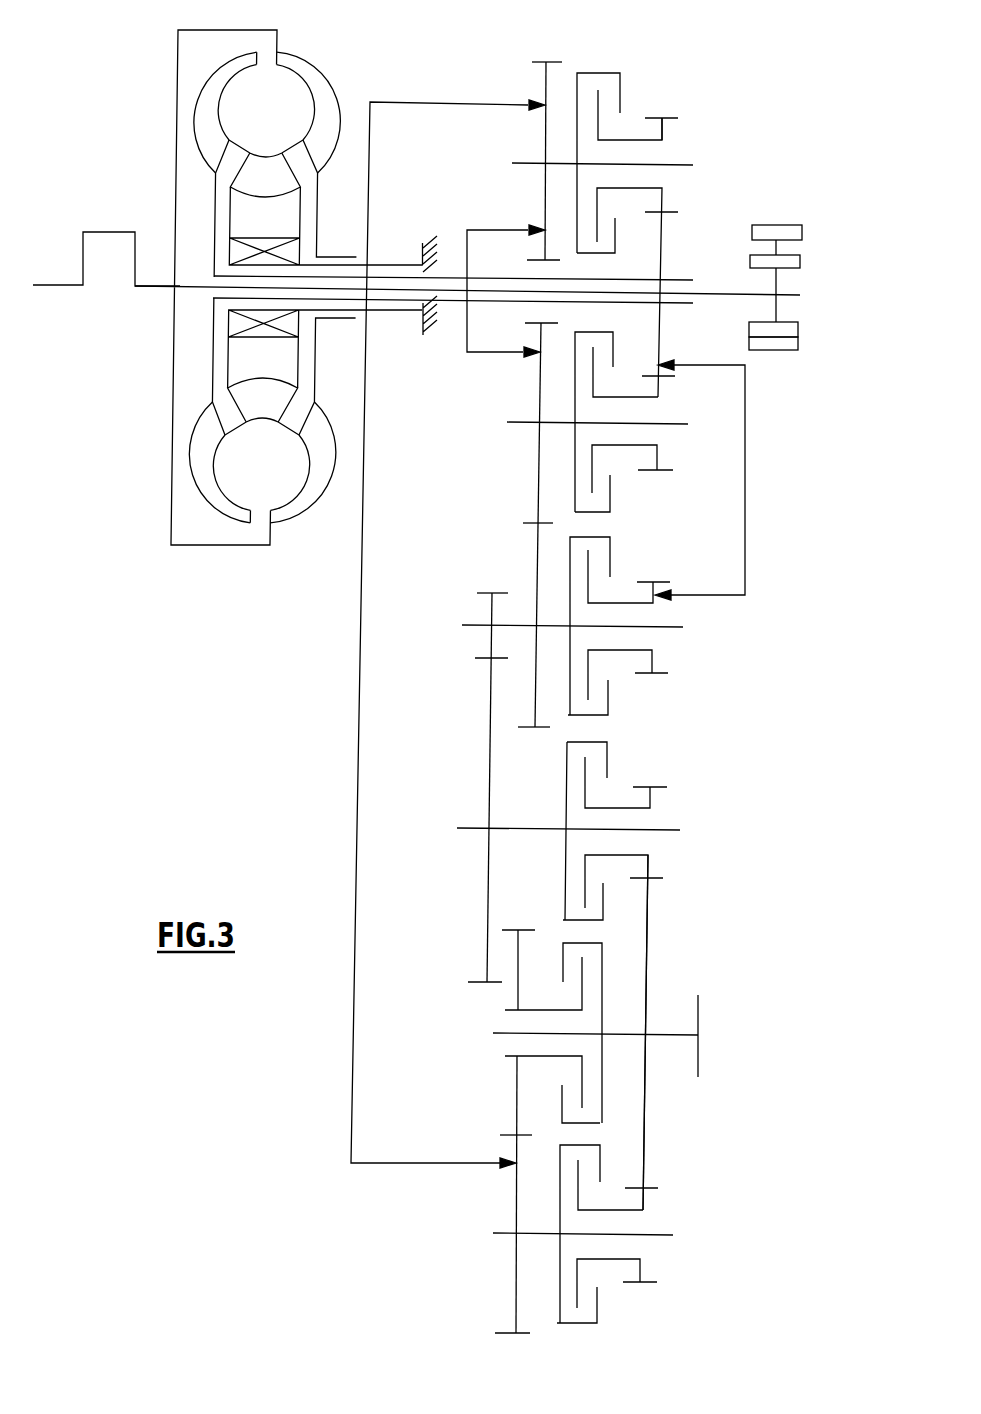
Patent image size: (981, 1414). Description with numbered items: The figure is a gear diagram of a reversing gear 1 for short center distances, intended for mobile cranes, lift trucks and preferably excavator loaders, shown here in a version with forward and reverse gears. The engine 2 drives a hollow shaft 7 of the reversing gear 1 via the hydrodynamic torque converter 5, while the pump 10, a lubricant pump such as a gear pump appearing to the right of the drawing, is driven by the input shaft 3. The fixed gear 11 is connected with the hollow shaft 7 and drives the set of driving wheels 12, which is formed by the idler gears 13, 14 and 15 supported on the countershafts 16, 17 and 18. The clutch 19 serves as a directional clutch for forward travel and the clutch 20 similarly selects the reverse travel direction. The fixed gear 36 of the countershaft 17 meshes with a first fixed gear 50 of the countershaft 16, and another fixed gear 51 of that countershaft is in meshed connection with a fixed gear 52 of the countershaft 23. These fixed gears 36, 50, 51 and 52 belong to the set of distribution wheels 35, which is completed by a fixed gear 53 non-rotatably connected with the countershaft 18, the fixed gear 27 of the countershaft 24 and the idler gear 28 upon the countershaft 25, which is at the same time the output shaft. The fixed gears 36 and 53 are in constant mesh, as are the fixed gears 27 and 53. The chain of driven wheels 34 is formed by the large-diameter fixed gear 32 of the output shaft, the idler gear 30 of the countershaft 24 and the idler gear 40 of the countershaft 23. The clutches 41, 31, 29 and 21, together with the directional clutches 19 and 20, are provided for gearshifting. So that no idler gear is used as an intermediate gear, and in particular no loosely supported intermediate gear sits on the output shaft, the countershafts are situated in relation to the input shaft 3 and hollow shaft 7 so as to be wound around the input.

The reversing gear 1 is at (272, 646).
The engine 2 is at (105, 232).
The input shaft 3 is at (707, 295).
The hydrodynamic torque converter 5 is at (220, 21).
The hollow shaft 7 is at (475, 303).
The pump 10 is at (819, 252).
The fixed gear 11 is at (662, 230).
The set of driving wheels 12 is at (688, 106).
The idler gear 13 is at (653, 660).
The idler gear 14 is at (657, 457).
The idler gear 15 is at (665, 130).
The countershaft 16 is at (677, 625).
The countershaft 17 is at (680, 422).
The countershaft 18 is at (690, 163).
The clutch 19 is at (608, 703).
The clutch 20 is at (610, 500).
The clutch 21 is at (600, 73).
The countershaft 23 is at (668, 828).
The countershaft 24 is at (663, 1233).
The countershaft 25 is at (678, 1033).
The fixed gear 27 is at (515, 1215).
The idler gear 28 is at (517, 1080).
The clutch 29 is at (600, 1117).
The idler gear 30 is at (640, 1268).
The clutch 31 is at (597, 1308).
The fixed gear 32 is at (645, 1112).
The chain of driven wheels 34 is at (680, 952).
The set of distribution wheels 35 is at (529, 45).
The fixed gear 36 is at (540, 445).
The idler gear 40 is at (650, 798).
The clutch 41 is at (603, 905).
The first fixed gear 50 is at (535, 713).
The fixed gear 51 is at (492, 645).
The fixed gear 52 is at (488, 797).
The fixed gear 53 is at (546, 138).